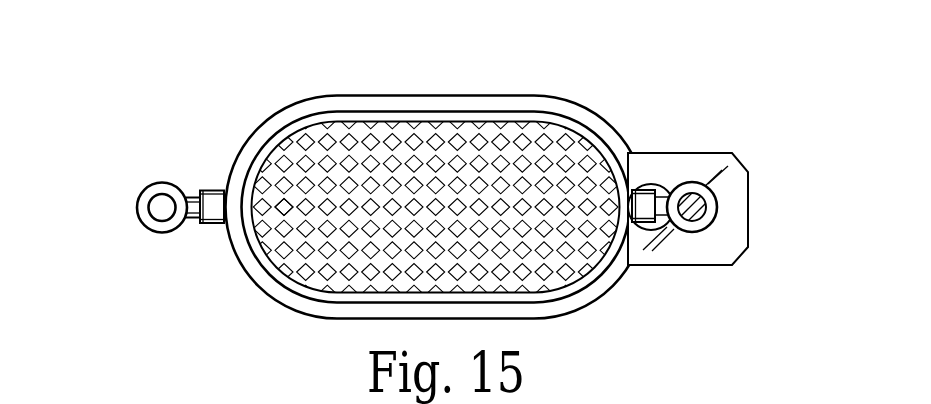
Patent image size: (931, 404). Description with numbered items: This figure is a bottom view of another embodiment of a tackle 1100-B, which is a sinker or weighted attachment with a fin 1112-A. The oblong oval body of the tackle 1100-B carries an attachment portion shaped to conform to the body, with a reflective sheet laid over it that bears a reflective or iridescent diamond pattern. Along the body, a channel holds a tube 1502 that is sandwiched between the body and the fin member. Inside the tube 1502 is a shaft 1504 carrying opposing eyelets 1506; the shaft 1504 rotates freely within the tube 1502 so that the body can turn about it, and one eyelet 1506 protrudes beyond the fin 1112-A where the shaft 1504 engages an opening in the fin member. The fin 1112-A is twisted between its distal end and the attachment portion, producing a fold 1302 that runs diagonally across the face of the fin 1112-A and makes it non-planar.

The tackle 1100-B is at (201, 74).
The tube 1502 is at (210, 190).
The shaft 1504 is at (193, 220).
The eyelet 1506 is at (137, 208).
The fold 1302 is at (712, 189).
The fin 1112-A is at (717, 266).